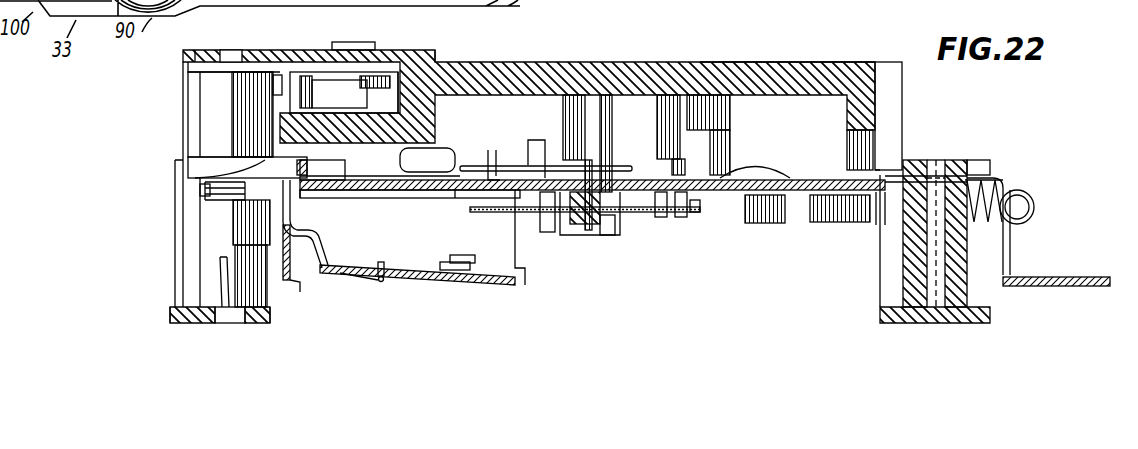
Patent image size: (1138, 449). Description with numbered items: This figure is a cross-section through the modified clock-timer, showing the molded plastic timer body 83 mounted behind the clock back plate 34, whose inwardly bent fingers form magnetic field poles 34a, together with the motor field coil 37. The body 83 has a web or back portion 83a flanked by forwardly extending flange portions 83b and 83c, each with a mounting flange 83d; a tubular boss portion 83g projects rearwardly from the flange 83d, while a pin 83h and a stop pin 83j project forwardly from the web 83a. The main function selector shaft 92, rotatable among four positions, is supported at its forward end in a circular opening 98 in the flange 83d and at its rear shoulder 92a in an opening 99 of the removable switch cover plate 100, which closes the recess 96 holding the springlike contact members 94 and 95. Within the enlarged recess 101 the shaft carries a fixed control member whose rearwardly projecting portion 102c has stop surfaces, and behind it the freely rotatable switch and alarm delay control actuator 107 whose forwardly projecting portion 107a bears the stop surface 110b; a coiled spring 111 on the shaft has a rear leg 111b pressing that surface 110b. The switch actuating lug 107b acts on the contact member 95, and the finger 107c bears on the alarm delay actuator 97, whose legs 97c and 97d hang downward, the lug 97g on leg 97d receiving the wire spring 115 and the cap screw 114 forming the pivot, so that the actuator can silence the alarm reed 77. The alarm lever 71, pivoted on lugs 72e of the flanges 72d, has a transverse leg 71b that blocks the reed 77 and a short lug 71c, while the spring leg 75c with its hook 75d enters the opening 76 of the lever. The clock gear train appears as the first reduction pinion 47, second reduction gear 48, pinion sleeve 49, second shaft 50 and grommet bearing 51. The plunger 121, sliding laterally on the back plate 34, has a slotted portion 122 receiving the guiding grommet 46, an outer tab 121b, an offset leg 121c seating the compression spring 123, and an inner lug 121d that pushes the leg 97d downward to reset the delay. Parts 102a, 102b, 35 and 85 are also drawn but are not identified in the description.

The body member 83 is at (856, 64).
The web or back portion 83a is at (800, 62).
The flange portion 83b is at (985, 295).
The flange portion 83c is at (183, 232).
The mounting flange 83d is at (985, 312).
The tubular boss portion 83g is at (955, 165).
The pin 83h is at (678, 158).
The stop pin 83j is at (580, 103).
The main function selector shaft 92 is at (265, 316).
The reduced diameter shoulder 92a is at (237, 49).
The contact member 94 is at (360, 44).
The contact member 95 is at (337, 44).
The recess 96 is at (398, 51).
The circular opening 98 is at (205, 328).
The opening 99 is at (230, 49).
The switch cover plate 100 is at (437, 55).
The enlarged recess 101 is at (188, 72).
The pin 102a is at (205, 274).
The pin 102b is at (318, 295).
The rearwardly projecting portion 102c is at (200, 190).
The switch and alarm delay control actuator 107 is at (186, 94).
The forwardly projecting portion 107a is at (258, 228).
The switch actuating lug 107b is at (313, 42).
The finger 107c is at (278, 170).
The radial stop surface 110b is at (215, 210).
The coiled biasing spring 111 is at (200, 182).
The spring leg 111b is at (265, 165).
The cap screw 114 is at (430, 155).
The wire spring 115 is at (535, 168).
The plunger 121 is at (1006, 172).
The tab portion 121b is at (1060, 280).
The offset leg 121c is at (1004, 250).
The upstanding lug 121d is at (540, 142).
The slotted out portion 122 is at (733, 175).
The compression spring 123 is at (1010, 224).
The alarm lever 71 is at (418, 282).
The transverse leg portion 71b is at (332, 176).
The lug 71c is at (305, 228).
The side flanges 72d is at (437, 282).
The lugs 72e is at (488, 283).
The leg portion 75c is at (378, 282).
The hook portion 75d is at (380, 270).
The opening 76 is at (372, 277).
The alarm reed 77 is at (292, 255).
The alarm delay actuator 97 is at (455, 192).
The leg portion 97c is at (422, 184).
The leg portion 97d is at (510, 200).
The transverse lug 97g is at (490, 150).
The back plate 34 is at (884, 196).
The magnetic field poles 34a is at (684, 218).
The roller 35 is at (832, 210).
The motor field coil 37 is at (510, 268).
The bearing grommet 46 is at (803, 175).
The first reduction pinion 47 is at (800, 215).
The second reduction gear 48 is at (542, 232).
The pinion sleeve 49 is at (588, 228).
The second shaft 50 is at (575, 236).
The grommet bearing 51 is at (598, 165).
The stop block 85 is at (615, 215).